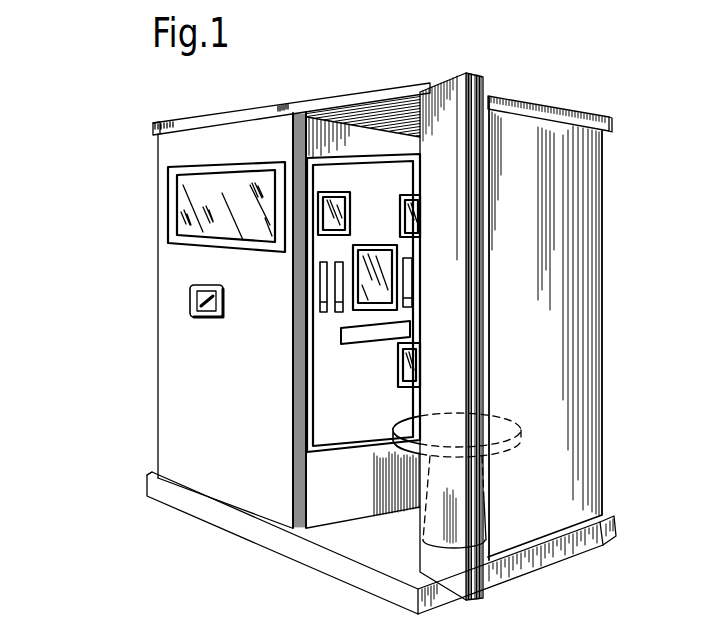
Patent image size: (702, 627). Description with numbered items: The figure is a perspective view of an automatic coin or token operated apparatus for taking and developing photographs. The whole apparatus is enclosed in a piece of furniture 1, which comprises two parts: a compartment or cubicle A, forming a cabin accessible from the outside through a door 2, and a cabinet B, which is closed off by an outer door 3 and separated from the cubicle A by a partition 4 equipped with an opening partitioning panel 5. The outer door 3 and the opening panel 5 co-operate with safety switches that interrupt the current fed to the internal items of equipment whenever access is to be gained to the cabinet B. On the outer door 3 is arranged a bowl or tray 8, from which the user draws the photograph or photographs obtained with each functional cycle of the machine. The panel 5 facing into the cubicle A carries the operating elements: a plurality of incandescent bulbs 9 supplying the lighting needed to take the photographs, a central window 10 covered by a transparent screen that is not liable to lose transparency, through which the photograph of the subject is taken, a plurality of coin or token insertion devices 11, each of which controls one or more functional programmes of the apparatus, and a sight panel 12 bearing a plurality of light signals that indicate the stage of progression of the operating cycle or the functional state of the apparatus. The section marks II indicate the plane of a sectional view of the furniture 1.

The piece of furniture 1 is at (620, 249).
The door 2 is at (462, 345).
The outer door 3 is at (199, 482).
The partition 4 is at (332, 505).
The opening partitioning panel 5 is at (316, 402).
The bowl or tray 8 is at (195, 326).
The incandescent bulbs 9 is at (405, 208).
The central window 10 is at (373, 258).
The coin or token insertion devices 11 is at (338, 293).
The sight panel 12 is at (370, 333).
The compartment or cubicle A is at (394, 533).
The cabinet B is at (245, 106).
The section line II is at (544, 277).